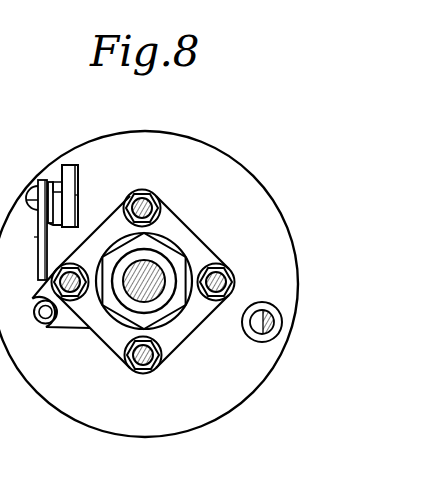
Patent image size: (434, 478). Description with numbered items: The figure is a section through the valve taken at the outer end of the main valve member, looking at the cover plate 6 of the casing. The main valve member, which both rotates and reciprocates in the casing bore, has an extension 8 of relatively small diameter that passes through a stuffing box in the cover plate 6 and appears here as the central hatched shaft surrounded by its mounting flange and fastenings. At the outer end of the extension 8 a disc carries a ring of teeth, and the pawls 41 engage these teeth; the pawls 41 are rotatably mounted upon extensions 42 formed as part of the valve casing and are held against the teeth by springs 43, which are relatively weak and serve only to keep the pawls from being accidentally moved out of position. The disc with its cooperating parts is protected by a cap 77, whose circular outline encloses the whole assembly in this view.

The cap 77 is at (230, 152).
The cover plate 6 is at (163, 223).
The extension 8 is at (157, 267).
The pawls 41 is at (37, 258).
The extensions 42 is at (72, 165).
The springs 43 is at (47, 178).